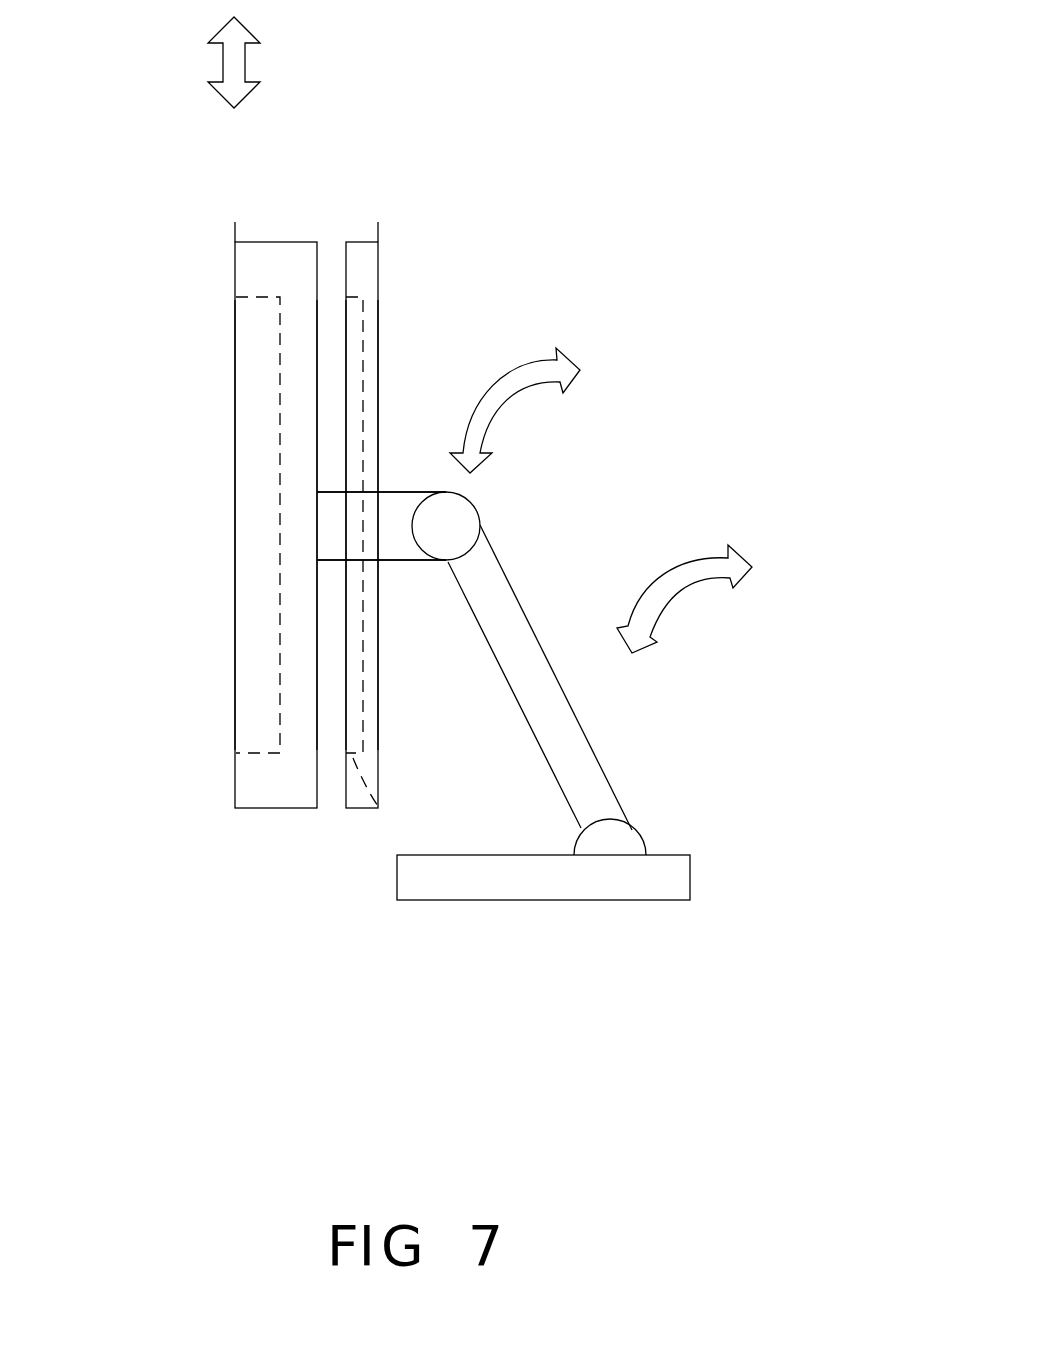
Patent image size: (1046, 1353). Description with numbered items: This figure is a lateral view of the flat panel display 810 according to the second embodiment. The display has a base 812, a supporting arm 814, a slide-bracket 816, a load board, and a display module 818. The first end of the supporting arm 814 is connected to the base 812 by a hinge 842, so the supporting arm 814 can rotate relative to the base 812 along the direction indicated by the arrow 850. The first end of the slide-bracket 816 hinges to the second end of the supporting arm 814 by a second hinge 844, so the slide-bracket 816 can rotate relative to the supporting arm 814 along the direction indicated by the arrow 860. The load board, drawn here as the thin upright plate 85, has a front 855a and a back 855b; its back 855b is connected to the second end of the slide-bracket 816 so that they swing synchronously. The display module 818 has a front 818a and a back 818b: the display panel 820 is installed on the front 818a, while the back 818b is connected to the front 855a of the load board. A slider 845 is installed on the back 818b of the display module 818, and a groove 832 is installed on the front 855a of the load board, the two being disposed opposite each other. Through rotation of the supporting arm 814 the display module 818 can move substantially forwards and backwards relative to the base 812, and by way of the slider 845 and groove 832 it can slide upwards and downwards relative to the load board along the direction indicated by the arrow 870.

The flat panel display 810 is at (782, 34).
The arrow 870 is at (233, 73).
The display module 818 is at (235, 242).
The front of display module 818a is at (233, 270).
The back of display module 818b is at (322, 250).
The display panel 820 is at (243, 372).
The support plate 85 is at (377, 242).
The front of load board 855a is at (340, 250).
The back of load board 855b is at (378, 355).
The groove 832 is at (352, 333).
The slider 845 is at (330, 547).
The slide-bracket 816 is at (398, 512).
The second hinge 844 is at (455, 518).
The supporting arm 814 is at (580, 783).
The hinge 842 is at (625, 838).
The base 812 is at (500, 887).
The arrow 860 is at (565, 367).
The arrow 850 is at (733, 565).